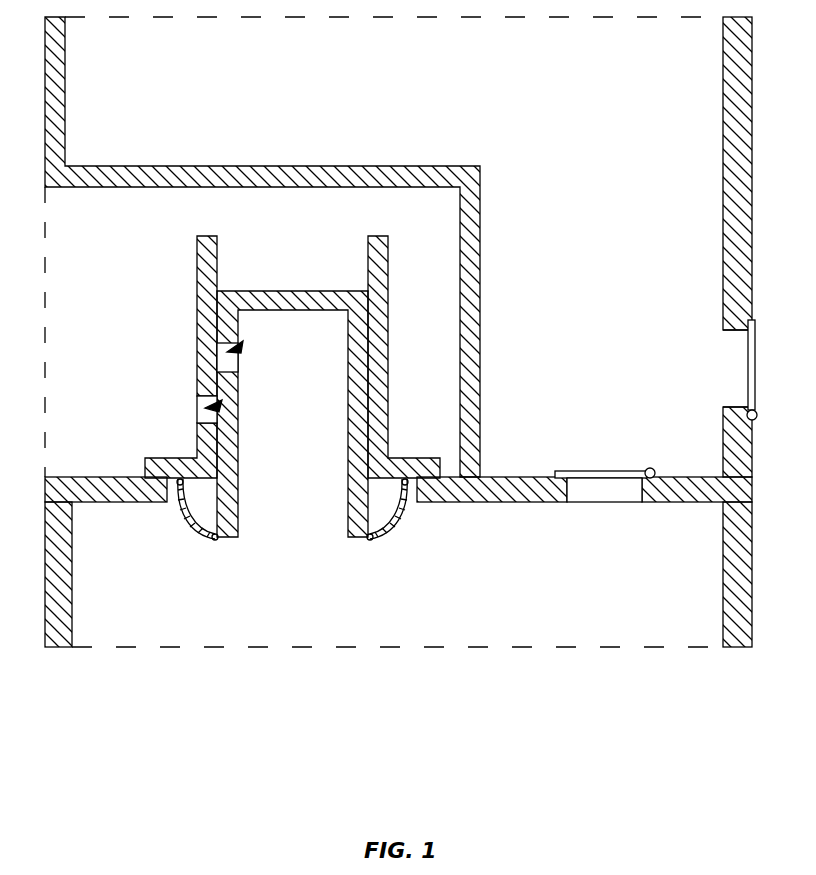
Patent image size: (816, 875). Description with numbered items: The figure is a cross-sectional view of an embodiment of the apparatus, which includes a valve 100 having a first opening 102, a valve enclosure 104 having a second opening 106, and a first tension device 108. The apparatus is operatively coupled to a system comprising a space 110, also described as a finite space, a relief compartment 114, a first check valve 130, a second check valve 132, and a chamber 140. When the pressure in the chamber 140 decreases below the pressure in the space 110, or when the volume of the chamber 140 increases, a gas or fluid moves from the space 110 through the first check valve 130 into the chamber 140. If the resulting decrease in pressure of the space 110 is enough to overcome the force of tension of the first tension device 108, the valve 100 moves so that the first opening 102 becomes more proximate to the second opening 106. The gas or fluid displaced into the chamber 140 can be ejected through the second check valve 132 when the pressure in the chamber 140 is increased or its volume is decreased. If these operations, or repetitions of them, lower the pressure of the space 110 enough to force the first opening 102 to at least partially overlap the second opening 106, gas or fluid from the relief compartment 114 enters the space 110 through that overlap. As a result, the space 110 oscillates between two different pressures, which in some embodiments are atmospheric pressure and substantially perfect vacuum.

The valve 100 is at (258, 291).
The first opening 102 is at (243, 345).
The valve enclosure 104 is at (198, 296).
The second opening 106 is at (221, 407).
The first tension device 108 is at (203, 529).
The space 110 is at (436, 610).
The relief compartment 114 is at (143, 374).
The first check valve 130 is at (605, 502).
The second check valve 132 is at (723, 383).
The chamber 140 is at (459, 98).